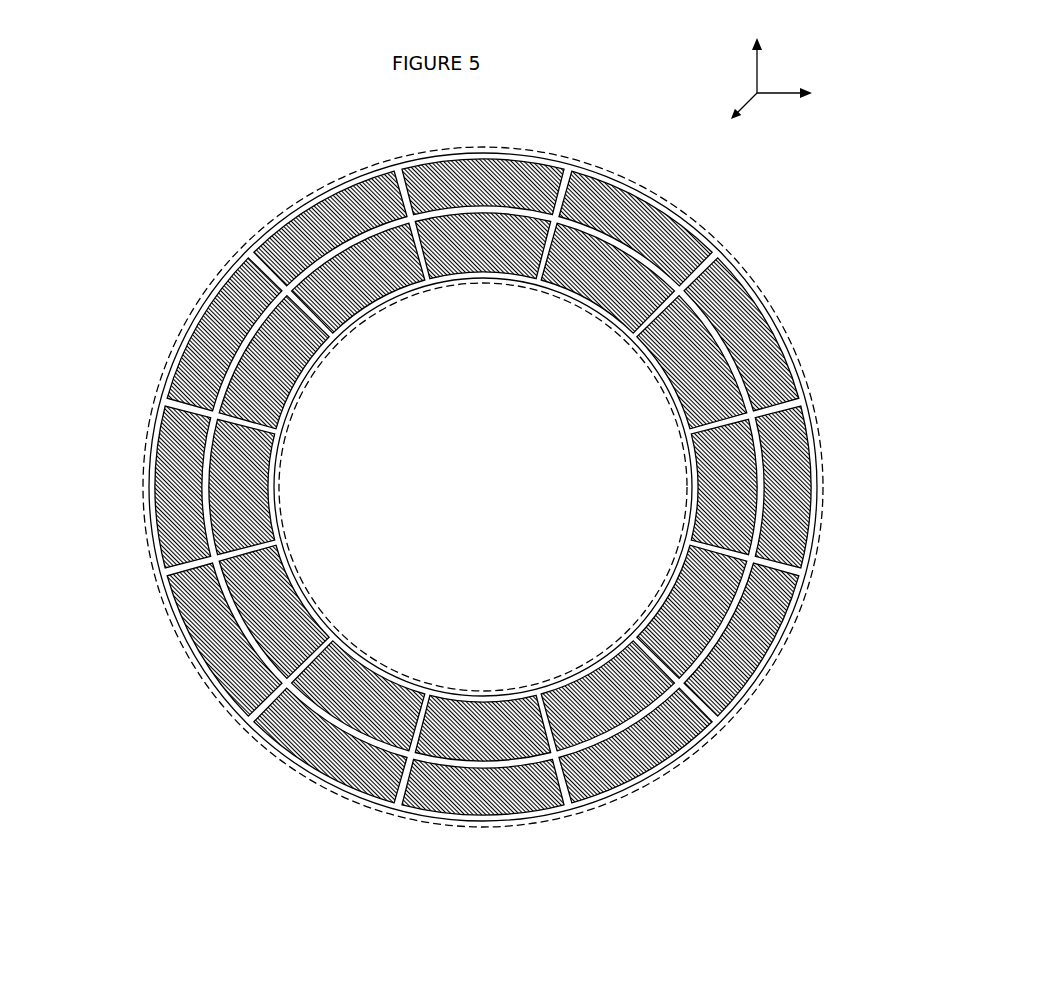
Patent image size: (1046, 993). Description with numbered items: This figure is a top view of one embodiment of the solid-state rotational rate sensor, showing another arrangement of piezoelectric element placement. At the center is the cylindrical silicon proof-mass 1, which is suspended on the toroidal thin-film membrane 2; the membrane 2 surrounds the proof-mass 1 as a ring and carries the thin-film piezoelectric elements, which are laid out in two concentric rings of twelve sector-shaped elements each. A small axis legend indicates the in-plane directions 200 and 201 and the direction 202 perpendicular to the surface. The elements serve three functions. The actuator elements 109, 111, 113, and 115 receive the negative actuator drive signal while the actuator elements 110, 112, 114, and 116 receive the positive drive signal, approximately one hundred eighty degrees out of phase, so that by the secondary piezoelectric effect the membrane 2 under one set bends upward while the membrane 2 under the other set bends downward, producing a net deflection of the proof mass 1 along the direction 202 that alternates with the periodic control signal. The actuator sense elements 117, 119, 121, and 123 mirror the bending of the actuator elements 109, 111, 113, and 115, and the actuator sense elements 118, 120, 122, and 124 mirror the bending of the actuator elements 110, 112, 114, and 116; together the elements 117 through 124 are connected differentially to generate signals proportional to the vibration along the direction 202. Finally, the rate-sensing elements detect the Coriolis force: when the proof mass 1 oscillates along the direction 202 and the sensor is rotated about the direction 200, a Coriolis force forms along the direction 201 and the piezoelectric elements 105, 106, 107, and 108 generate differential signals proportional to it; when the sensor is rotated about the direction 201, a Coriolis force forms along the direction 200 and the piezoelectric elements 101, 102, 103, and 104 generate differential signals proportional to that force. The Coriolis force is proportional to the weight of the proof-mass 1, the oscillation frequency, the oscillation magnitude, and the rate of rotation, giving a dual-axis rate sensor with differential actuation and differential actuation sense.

The cylindrical silicon proof-mass 1 is at (490, 494).
The toroidal thin-film membrane 2 is at (135, 528).
The piezoelectric element 101 is at (807, 498).
The piezoelectric element 102 is at (713, 503).
The piezoelectric element 103 is at (165, 442).
The piezoelectric element 104 is at (237, 467).
The piezoelectric element 105 is at (430, 168).
The piezoelectric element 106 is at (447, 257).
The piezoelectric element 107 is at (448, 798).
The piezoelectric element 108 is at (500, 707).
The actuator element 109 is at (657, 227).
The actuator element 110 is at (602, 275).
The actuator element 111 is at (288, 237).
The actuator element 112 is at (360, 302).
The actuator element 113 is at (348, 780).
The actuator element 114 is at (397, 697).
The actuator element 115 is at (668, 753).
The actuator element 116 is at (605, 685).
The actuator sense element 117 is at (793, 382).
The actuator sense element 118 is at (695, 405).
The actuator sense element 119 is at (198, 333).
The actuator sense element 120 is at (273, 387).
The actuator sense element 121 is at (195, 613).
The actuator sense element 122 is at (268, 573).
The actuator sense element 123 is at (738, 697).
The actuator sense element 124 is at (685, 583).
The direction 200 is at (808, 93).
The direction 201 is at (778, 54).
The direction 202 is at (736, 121).